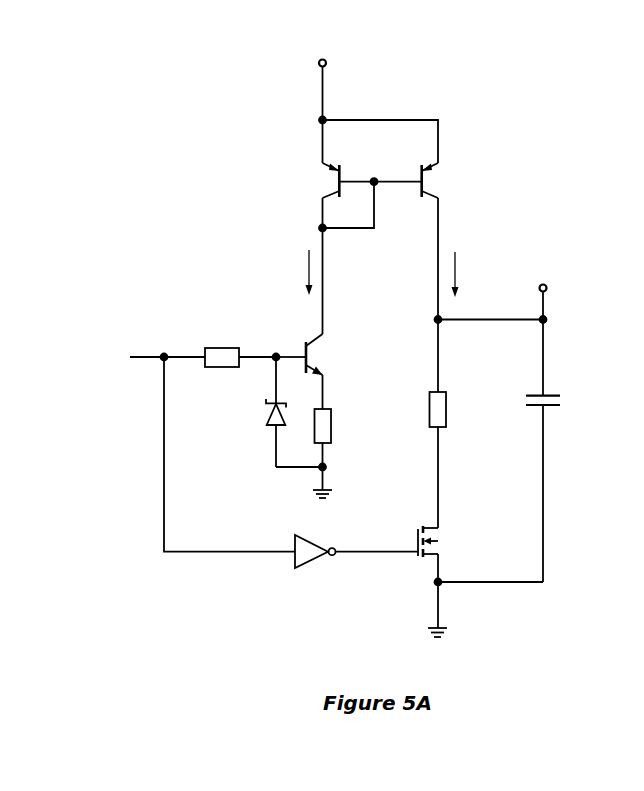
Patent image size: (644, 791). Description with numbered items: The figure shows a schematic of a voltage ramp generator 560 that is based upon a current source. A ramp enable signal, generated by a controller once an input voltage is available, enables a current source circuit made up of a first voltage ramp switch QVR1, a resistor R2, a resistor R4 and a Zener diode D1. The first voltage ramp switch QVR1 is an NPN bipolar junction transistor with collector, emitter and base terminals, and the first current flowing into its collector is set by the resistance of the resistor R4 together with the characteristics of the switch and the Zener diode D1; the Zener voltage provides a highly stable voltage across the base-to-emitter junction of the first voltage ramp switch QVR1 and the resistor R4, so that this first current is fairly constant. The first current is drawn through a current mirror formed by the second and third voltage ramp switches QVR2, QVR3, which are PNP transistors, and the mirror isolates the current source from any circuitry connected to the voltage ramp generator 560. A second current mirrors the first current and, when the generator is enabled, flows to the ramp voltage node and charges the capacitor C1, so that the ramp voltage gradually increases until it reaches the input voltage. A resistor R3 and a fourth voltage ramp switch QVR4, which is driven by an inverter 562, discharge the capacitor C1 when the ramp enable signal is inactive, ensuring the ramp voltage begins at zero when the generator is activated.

The voltage ramp generator 560 is at (141, 54).
The inverter 562 is at (315, 560).
The first voltage ramp switch QVR1 is at (339, 354).
The second voltage ramp switch QVR2 is at (304, 180).
The third voltage ramp switch QVR3 is at (454, 180).
The fourth voltage ramp switch QVR4 is at (453, 541).
The resistor R2 is at (222, 336).
The resistor R3 is at (458, 410).
The resistor R4 is at (337, 426).
The capacitor C1 is at (563, 410).
The Zener diode D1 is at (265, 424).